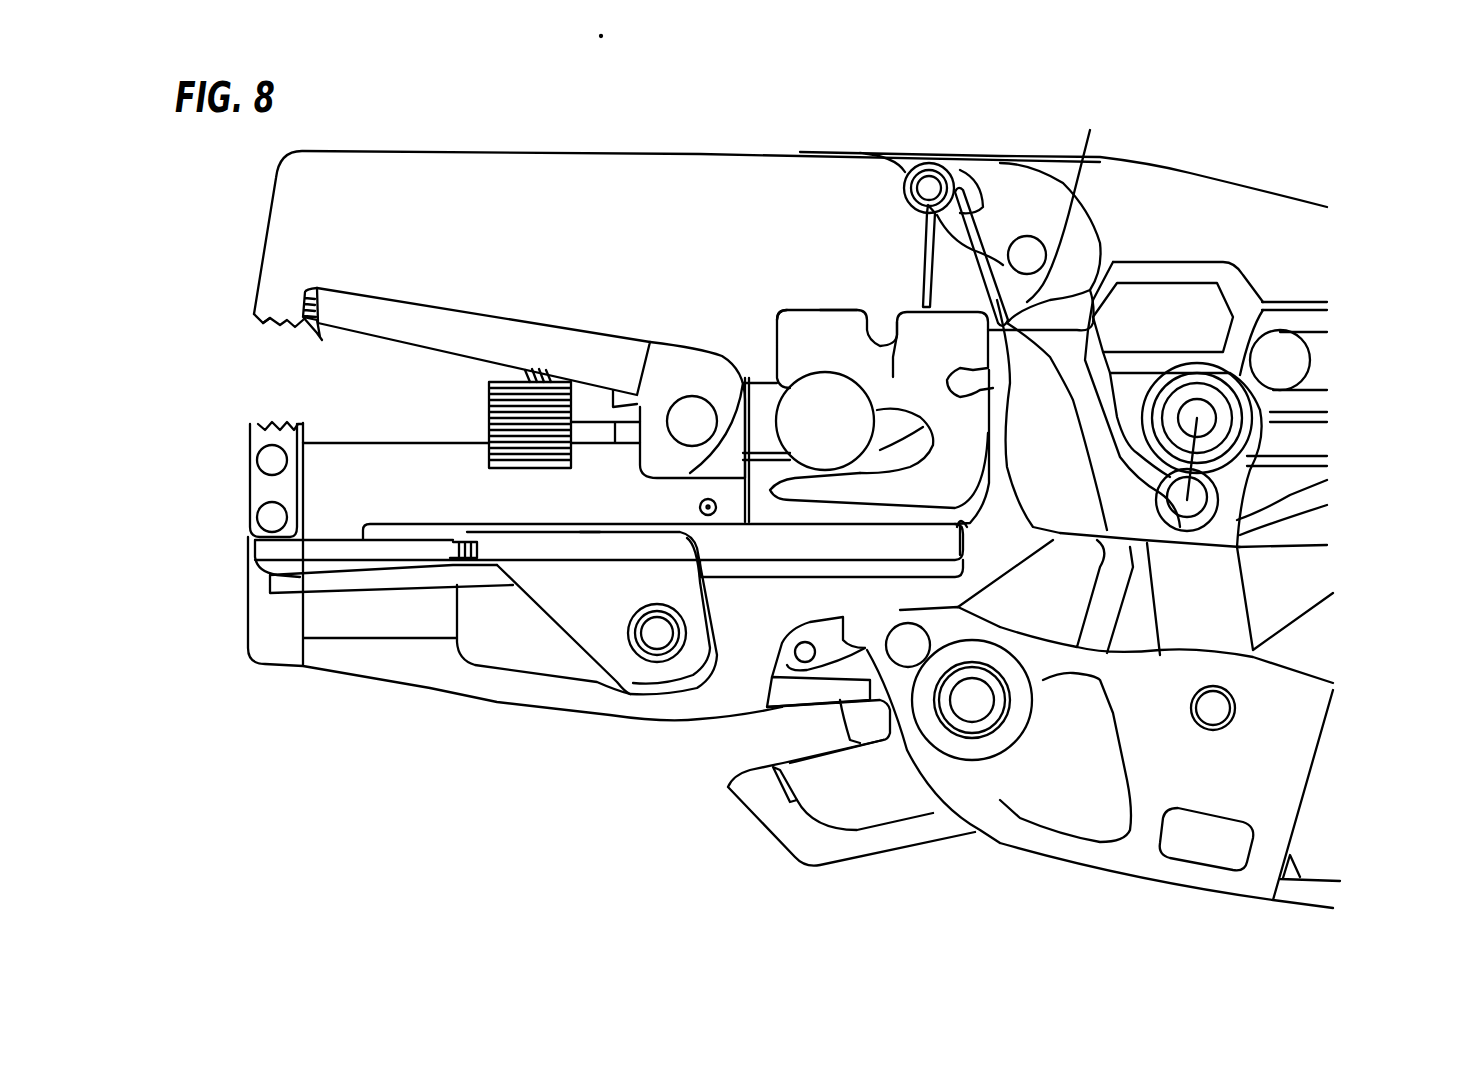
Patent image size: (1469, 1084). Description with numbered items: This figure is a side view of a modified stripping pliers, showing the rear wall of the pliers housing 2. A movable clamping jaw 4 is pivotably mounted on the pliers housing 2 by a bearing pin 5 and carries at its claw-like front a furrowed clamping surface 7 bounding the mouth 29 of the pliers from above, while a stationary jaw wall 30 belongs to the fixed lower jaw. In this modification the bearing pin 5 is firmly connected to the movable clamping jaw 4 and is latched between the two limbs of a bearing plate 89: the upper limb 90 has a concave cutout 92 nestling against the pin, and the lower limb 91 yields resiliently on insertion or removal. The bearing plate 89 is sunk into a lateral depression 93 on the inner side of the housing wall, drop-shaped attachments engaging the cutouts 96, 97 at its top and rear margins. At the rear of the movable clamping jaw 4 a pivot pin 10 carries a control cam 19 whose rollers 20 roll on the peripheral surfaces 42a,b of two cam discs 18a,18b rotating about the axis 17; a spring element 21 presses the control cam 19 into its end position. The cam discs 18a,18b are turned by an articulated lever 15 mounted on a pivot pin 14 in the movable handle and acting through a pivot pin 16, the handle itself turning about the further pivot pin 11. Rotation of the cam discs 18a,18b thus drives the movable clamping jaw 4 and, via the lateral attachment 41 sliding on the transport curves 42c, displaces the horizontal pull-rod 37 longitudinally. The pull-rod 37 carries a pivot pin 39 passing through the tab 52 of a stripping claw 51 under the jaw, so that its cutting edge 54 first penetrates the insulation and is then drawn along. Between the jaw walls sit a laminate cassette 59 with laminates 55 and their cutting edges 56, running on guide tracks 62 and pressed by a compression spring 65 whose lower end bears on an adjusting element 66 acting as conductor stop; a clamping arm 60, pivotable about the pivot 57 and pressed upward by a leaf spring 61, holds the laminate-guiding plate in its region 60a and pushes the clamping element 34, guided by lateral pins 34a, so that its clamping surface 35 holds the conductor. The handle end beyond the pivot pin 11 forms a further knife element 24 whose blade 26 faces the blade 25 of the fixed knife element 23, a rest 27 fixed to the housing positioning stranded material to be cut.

The pliers housing 2 is at (1230, 183).
The movable clamping jaw 4 is at (262, 237).
The bearing pin 5 is at (820, 393).
The clamping surface 7 is at (265, 328).
The pivot pin 10 is at (1030, 234).
The further pivot pin 11 is at (970, 713).
The pivot pin 14 is at (1215, 708).
The articulated lever 15 is at (1253, 613).
The pivot pin 16 is at (1207, 540).
The axis 17 is at (1213, 423).
The cam discs 18a,18b is at (1133, 533).
The control cam 19 is at (1007, 297).
The rollers 20 is at (1150, 283).
The spring element 21 is at (942, 233).
The fixed knife element 23 is at (827, 813).
The further knife element 24 is at (767, 675).
The blade 25 is at (820, 753).
The blade 26 is at (780, 710).
The rest 27 is at (750, 825).
The mouth of the pliers 29 is at (240, 374).
The stationary jaw wall 30 is at (248, 607).
The clamping element 34 is at (260, 483).
The lateral pins 34a is at (268, 453).
The clamping surface 35 is at (265, 423).
The pull-rod 37 is at (766, 397).
The pivot pin 39 is at (693, 410).
The lateral attachment 41 is at (1297, 360).
The peripheral surfaces 42a,b is at (1070, 330).
The transport curves 42c is at (1200, 280).
The stripping claw 51 is at (388, 318).
The tab 52 is at (663, 377).
The cutting edge 54 is at (318, 322).
The laminates 55 is at (593, 534).
The cutting edges 56 is at (307, 443).
The pivot 57 is at (650, 642).
The laminate cassette 59 is at (370, 443).
The clamping arm 60 is at (563, 545).
The region 60a is at (560, 548).
The leaf spring 61 is at (372, 582).
The guide tracks 62 is at (750, 520).
The compression spring 65 is at (522, 373).
The adjusting element 66 is at (488, 405).
The bearing plate 89 is at (855, 330).
The upper limb 90 is at (787, 330).
The lower limb 91 is at (803, 490).
The concave cutout 92 is at (827, 390).
The lateral depression 93 is at (962, 525).
The cutout 96 is at (893, 358).
The cutout 97 is at (950, 377).